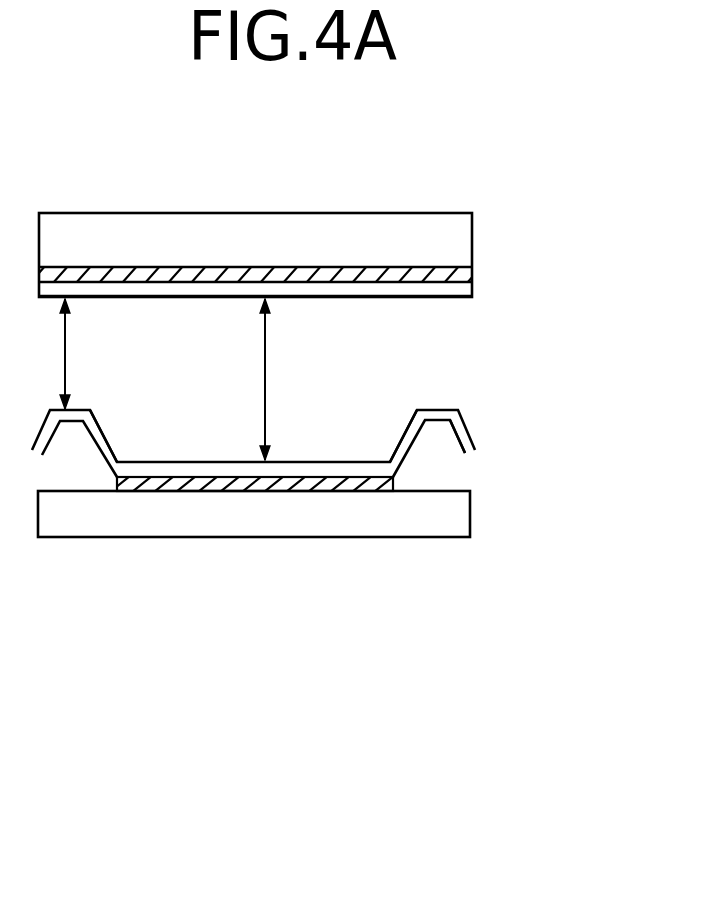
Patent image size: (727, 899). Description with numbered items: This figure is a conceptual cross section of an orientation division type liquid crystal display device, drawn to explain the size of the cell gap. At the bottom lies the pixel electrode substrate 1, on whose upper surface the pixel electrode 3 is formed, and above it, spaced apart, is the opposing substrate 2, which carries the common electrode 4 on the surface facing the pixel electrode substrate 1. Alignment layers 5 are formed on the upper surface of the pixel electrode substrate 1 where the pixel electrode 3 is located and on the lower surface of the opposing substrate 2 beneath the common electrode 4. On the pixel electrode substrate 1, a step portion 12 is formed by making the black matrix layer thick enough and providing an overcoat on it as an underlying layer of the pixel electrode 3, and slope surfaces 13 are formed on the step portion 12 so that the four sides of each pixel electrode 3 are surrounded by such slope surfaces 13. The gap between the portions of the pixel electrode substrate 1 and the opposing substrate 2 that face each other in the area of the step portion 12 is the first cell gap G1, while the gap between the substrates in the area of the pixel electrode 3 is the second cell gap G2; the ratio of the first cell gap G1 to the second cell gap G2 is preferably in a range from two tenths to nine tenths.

The pixel electrode substrate 1 is at (457, 512).
The opposing substrate 2 is at (453, 238).
The pixel electrode 3 is at (192, 492).
The common electrode 4 is at (455, 270).
The alignment layer 5 is at (460, 290).
The step portion 12 is at (462, 402).
The slope surface 13 is at (108, 440).
The first cell gap G1 is at (85, 354).
The second cell gap G2 is at (286, 379).